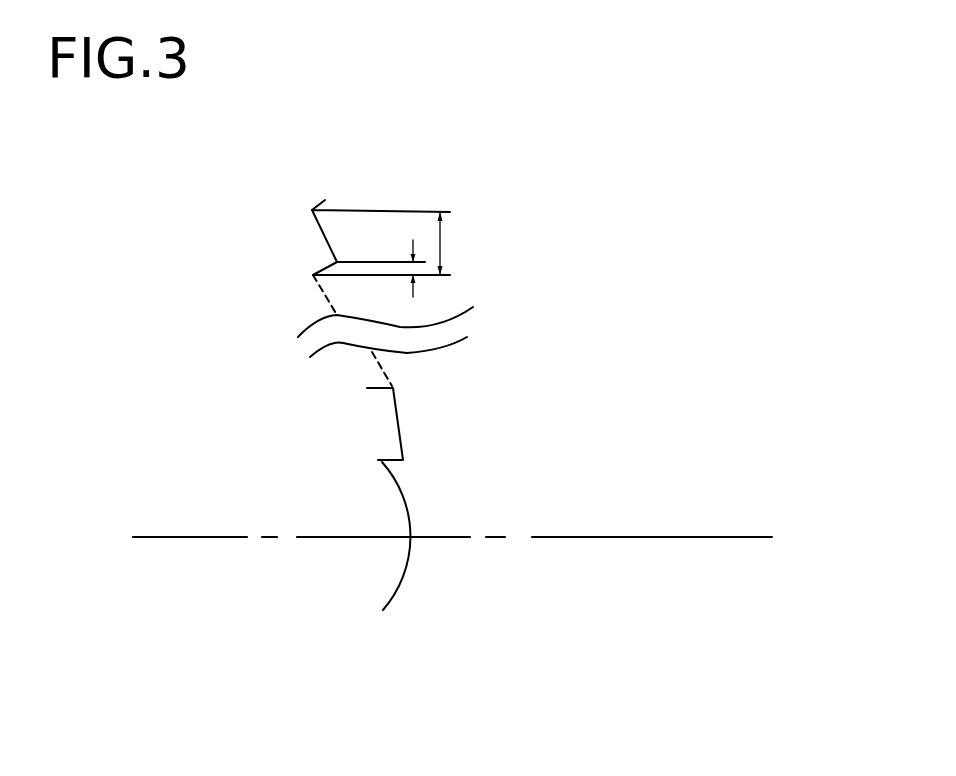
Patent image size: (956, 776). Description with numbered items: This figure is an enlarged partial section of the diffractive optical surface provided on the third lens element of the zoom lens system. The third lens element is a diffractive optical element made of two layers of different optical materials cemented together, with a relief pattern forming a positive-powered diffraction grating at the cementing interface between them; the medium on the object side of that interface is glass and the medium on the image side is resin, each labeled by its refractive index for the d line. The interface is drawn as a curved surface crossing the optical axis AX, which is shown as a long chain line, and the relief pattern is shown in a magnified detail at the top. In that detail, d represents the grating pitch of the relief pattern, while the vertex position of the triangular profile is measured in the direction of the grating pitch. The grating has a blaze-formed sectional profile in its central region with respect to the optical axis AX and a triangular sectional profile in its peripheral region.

The optical axis AX is at (683, 537).
The grating pitch d is at (453, 243).